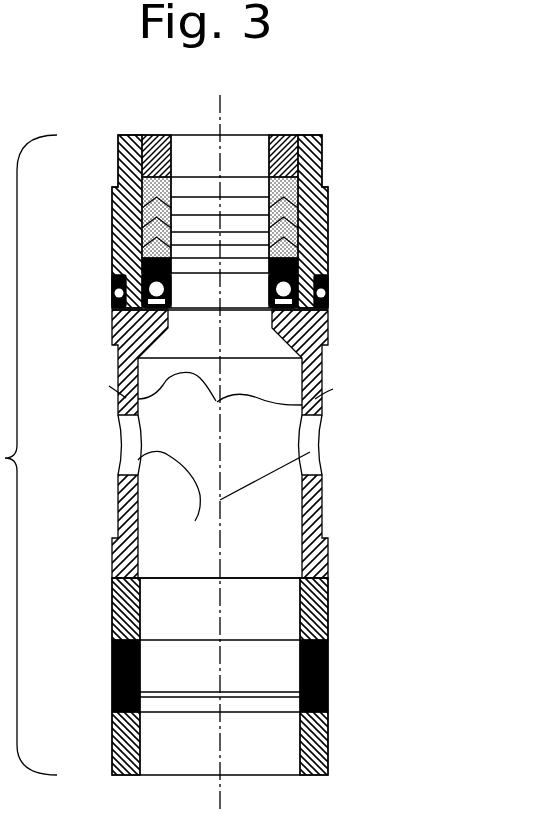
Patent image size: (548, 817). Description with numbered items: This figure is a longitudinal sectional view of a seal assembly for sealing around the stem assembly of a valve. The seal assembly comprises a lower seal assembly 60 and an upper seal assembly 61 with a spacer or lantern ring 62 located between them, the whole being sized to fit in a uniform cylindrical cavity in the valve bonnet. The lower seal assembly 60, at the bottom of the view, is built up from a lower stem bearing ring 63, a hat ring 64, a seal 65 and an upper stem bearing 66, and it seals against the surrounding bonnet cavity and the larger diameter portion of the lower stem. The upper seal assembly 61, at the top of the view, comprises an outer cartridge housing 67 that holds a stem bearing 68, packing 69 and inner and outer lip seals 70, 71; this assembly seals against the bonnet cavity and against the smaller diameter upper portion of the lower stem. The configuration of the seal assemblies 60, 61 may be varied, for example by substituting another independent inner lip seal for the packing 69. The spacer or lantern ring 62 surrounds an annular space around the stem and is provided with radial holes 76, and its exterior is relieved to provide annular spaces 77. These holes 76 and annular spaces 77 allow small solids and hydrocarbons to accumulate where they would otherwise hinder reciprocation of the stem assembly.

The lower seal assembly 60 is at (100, 580).
The upper seal assembly 61 is at (100, 135).
The spacer or lantern ring 62 is at (100, 312).
The lower stem bearing ring 63 is at (326, 759).
The hat ring 64 is at (328, 702).
The seal 65 is at (328, 652).
The upper stem bearing 66 is at (328, 606).
The outer cartridge housing 67 is at (320, 203).
The stem bearing 68 is at (288, 134).
The packing 69 is at (263, 190).
The inner lip seal 70 is at (303, 262).
The outer lip seal 71 is at (323, 290).
The radial holes 76 is at (220, 500).
The annular spaces 77 is at (217, 400).